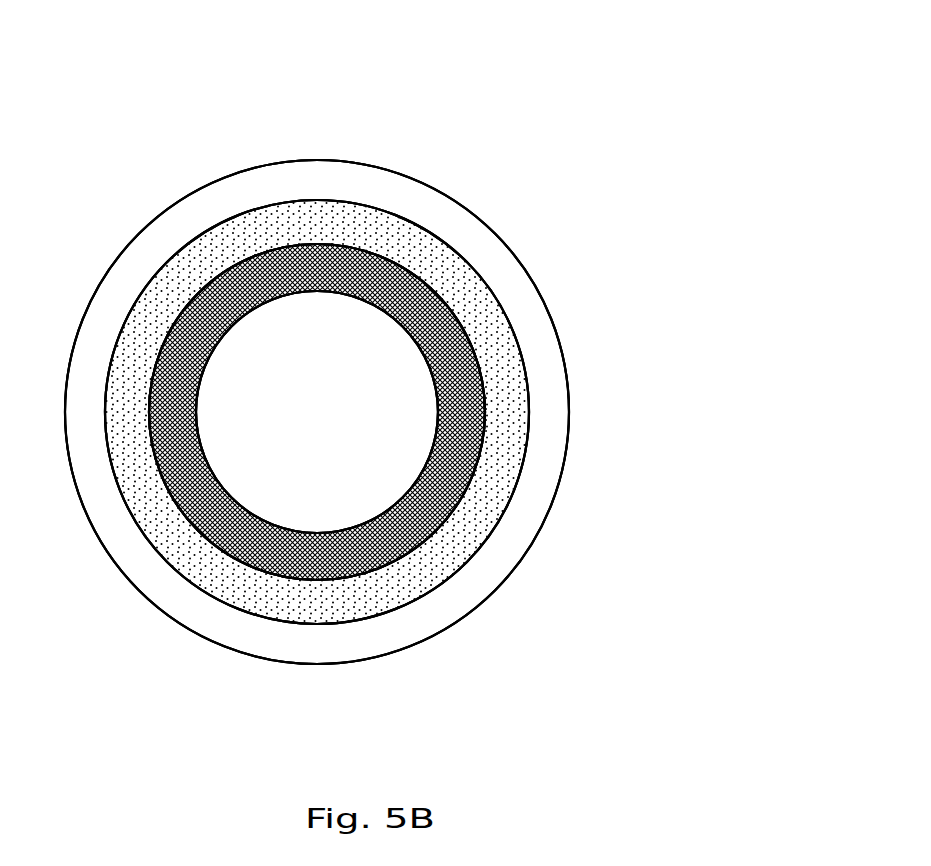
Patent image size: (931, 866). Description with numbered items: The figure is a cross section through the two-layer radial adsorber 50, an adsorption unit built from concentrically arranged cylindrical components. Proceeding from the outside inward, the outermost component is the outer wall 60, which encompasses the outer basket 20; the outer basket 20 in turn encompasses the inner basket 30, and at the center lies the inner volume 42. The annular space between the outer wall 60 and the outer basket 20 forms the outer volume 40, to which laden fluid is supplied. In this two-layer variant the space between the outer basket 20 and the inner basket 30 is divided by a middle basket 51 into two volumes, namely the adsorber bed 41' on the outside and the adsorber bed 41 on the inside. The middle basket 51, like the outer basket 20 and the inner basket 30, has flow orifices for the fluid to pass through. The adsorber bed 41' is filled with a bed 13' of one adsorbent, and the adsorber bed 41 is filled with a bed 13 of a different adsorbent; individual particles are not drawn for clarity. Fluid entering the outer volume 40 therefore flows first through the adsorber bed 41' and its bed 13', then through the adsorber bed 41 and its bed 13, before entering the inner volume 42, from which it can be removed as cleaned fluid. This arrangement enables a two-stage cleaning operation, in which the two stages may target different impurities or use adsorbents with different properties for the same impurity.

The two-layer radial adsorber 50 is at (130, 106).
The outer wall 60 is at (470, 613).
The outer volume 40 is at (485, 248).
The outer basket 20 is at (458, 570).
The adsorber bed 41' is at (442, 412).
The bed of adsorbent 13' is at (442, 412).
The middle basket 51 is at (437, 530).
The adsorber bed 41 is at (446, 412).
The bed of adsorbent 13 is at (446, 412).
The inner basket 30 is at (433, 492).
The inner volume 42 is at (400, 368).